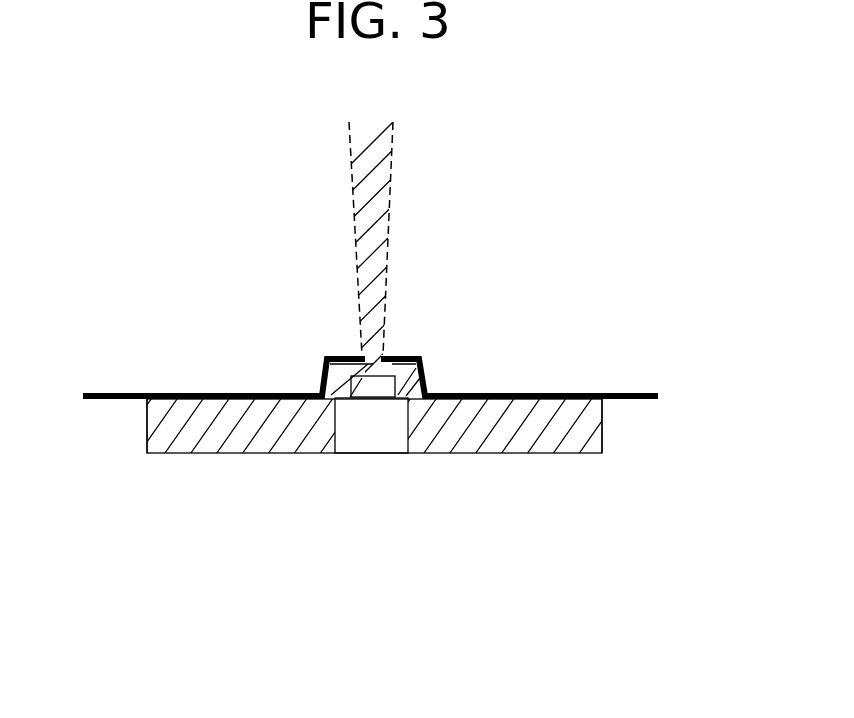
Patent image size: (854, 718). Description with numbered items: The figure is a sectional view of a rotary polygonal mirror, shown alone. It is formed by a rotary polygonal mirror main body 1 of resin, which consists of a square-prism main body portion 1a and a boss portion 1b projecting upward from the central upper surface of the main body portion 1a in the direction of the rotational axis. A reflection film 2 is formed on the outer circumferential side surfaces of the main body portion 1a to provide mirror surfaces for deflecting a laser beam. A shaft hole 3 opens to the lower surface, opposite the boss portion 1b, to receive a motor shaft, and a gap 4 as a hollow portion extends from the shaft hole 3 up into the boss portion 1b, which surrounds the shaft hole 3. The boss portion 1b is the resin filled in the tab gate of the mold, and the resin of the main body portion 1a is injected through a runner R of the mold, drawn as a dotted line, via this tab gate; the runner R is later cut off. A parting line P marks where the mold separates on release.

The runner R is at (393, 168).
The parting line P is at (658, 393).
The main body portion 1a is at (537, 394).
The boss portion 1b is at (421, 368).
The gap 4 is at (362, 398).
The shaft hole 3 is at (407, 431).
The rotary polygonal mirror main body 1 is at (211, 462).
The reflection film 2 is at (147, 428).